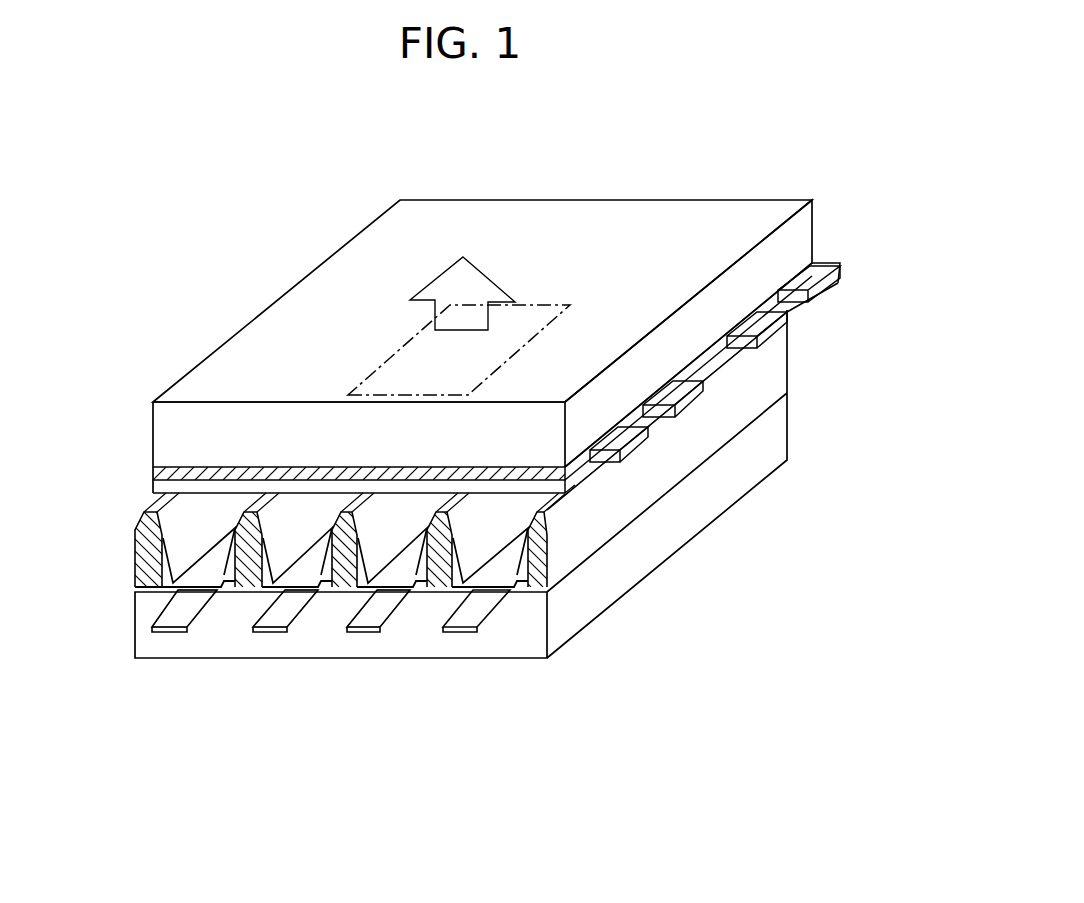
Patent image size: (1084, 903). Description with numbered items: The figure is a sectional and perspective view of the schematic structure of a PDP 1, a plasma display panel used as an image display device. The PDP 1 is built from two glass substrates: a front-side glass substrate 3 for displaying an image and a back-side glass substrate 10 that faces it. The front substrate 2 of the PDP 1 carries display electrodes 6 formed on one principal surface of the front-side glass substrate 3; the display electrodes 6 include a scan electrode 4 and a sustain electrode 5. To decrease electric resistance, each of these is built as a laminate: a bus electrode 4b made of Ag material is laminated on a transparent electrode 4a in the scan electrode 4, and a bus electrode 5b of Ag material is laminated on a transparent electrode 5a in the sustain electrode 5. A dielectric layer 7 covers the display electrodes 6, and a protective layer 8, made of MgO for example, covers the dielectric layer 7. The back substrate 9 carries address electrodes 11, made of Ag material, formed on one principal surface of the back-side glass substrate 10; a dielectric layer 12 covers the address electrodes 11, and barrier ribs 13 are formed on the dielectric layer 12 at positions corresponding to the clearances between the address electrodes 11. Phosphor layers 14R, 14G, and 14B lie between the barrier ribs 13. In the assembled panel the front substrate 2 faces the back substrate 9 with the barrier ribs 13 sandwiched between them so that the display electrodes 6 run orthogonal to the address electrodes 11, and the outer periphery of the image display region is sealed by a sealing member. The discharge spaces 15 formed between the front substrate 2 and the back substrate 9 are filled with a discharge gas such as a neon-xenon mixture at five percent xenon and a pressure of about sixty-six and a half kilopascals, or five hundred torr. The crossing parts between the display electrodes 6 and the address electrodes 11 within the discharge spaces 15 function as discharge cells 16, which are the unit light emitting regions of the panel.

The PDP 1 is at (330, 235).
The front substrate 2 is at (707, 260).
The front-side glass substrate 3 is at (157, 425).
The scan electrode 4 is at (773, 601).
The transparent electrode 4a is at (683, 405).
The bus electrode 4b is at (592, 437).
The sustain electrode 5 is at (863, 536).
The transparent electrode 5a is at (622, 440).
The bus electrode 5b is at (680, 397).
The display electrodes 6 is at (958, 452).
The dielectric layer 7 is at (153, 470).
The protective layer 8 is at (153, 485).
The back substrate 9 is at (525, 660).
The back-side glass substrate 10 is at (530, 618).
The address electrodes 11 is at (185, 585).
The dielectric layer 12 is at (140, 591).
The barrier ribs 13 is at (163, 541).
The phosphor layer 14R is at (197, 575).
The phosphor layer 14G is at (290, 578).
The phosphor layer 14B is at (390, 577).
The discharge spaces 15 is at (483, 524).
The discharge cells 16 is at (378, 365).